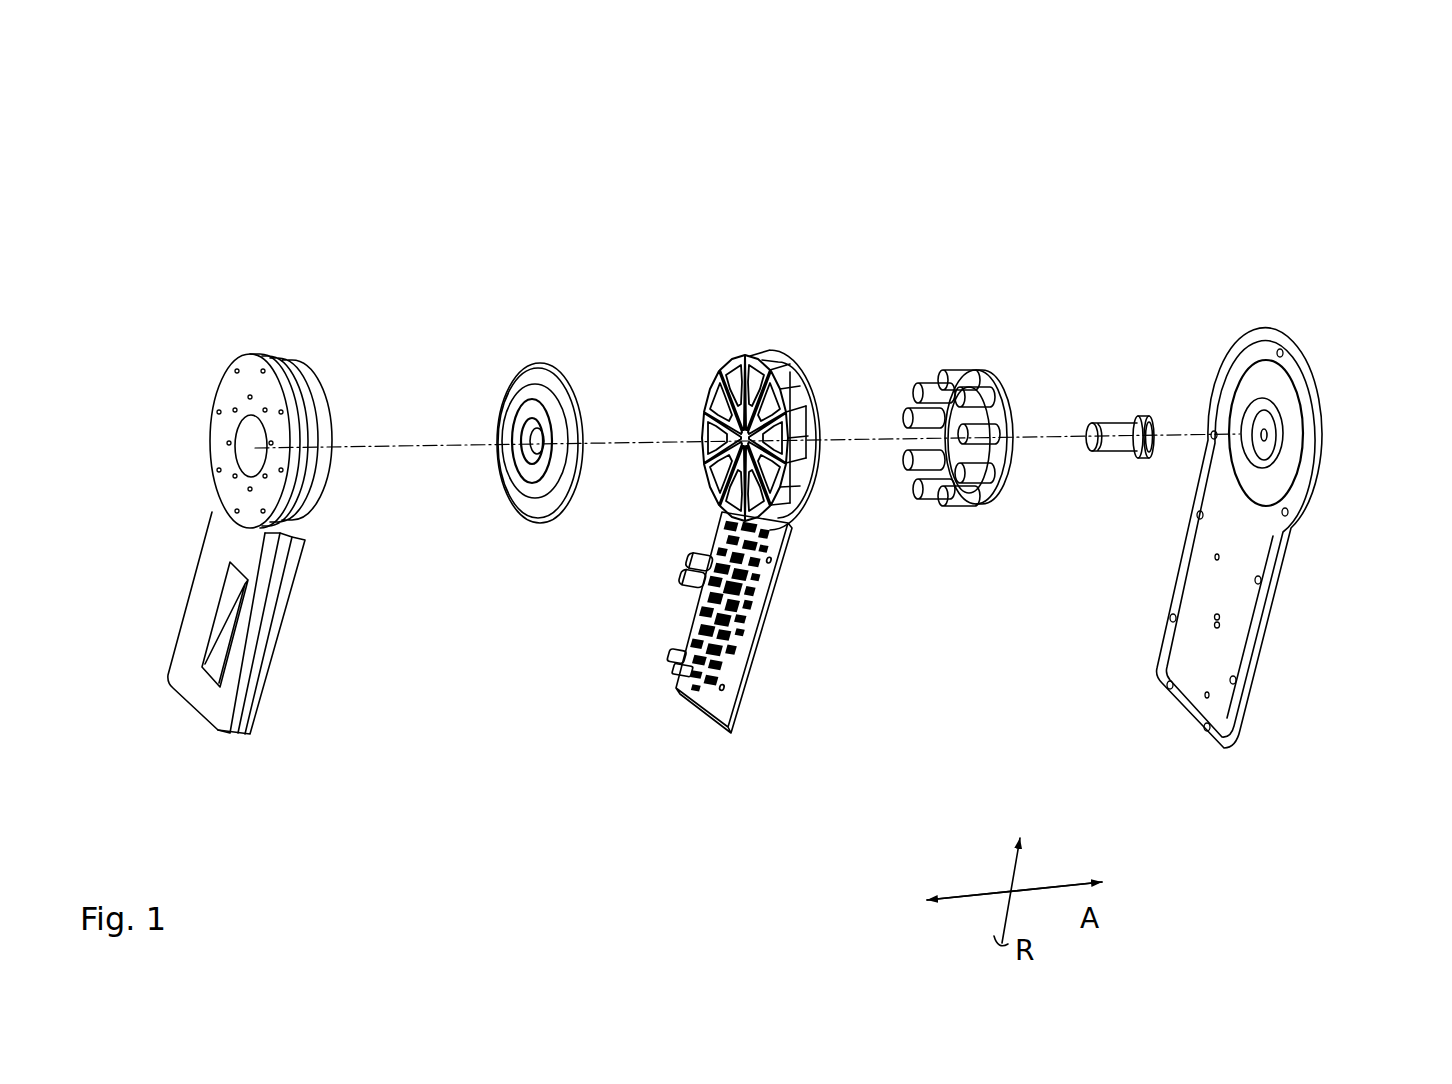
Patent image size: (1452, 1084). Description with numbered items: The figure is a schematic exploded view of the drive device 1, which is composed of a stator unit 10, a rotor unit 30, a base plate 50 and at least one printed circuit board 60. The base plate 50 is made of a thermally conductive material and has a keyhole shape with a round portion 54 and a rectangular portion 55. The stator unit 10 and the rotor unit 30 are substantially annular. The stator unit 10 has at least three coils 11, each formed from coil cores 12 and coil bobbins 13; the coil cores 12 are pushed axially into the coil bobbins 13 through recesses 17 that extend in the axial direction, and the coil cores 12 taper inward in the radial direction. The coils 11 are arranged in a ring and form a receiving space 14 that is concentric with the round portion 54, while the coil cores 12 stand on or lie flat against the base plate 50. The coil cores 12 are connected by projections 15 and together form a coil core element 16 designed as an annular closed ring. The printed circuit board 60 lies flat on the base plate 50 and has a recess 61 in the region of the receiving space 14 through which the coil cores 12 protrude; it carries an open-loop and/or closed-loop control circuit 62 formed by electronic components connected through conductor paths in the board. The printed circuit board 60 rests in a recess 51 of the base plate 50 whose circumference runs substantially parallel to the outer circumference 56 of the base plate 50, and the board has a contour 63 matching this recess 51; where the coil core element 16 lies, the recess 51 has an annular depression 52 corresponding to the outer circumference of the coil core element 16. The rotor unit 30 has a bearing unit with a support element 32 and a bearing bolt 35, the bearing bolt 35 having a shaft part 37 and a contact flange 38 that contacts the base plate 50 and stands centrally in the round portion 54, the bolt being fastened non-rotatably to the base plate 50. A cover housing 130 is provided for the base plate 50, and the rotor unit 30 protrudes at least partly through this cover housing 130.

The drive device 1 is at (1067, 148).
The stator unit 10 is at (837, 416).
The coils 11 is at (829, 505).
The coil bobbins 13 is at (817, 468).
The receiving space 14 is at (689, 357).
The recess 61 is at (740, 437).
The coil cores 12 is at (1014, 455).
The projections 15 is at (996, 411).
The coil core element 16 is at (937, 512).
The recesses 17 is at (962, 430).
The rotor unit 30 is at (503, 535).
The support element 32 is at (540, 522).
The bearing bolt 35 is at (1130, 416).
The shaft part 37 is at (1113, 420).
The contact flange 38 is at (1149, 417).
The base plate 50 is at (1249, 493).
The recess 51 is at (1207, 585).
The annular depression 52 is at (1278, 478).
The round portion 54 is at (1333, 430).
The rectangular portion 55 is at (1270, 647).
The outer circumference 56 is at (1240, 722).
The printed circuit board 60 is at (747, 668).
The open-loop and/or closed-loop control circuit 62 is at (672, 680).
The contour 63 is at (742, 674).
The cover housing 130 is at (197, 736).